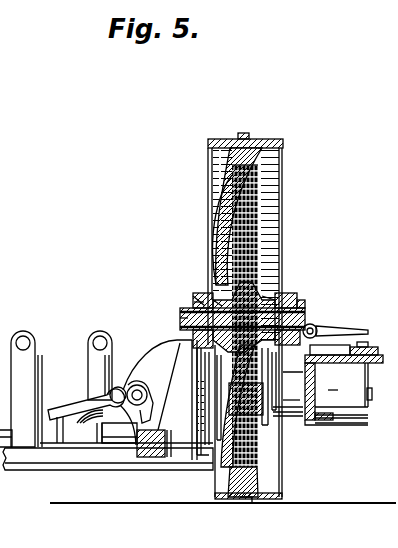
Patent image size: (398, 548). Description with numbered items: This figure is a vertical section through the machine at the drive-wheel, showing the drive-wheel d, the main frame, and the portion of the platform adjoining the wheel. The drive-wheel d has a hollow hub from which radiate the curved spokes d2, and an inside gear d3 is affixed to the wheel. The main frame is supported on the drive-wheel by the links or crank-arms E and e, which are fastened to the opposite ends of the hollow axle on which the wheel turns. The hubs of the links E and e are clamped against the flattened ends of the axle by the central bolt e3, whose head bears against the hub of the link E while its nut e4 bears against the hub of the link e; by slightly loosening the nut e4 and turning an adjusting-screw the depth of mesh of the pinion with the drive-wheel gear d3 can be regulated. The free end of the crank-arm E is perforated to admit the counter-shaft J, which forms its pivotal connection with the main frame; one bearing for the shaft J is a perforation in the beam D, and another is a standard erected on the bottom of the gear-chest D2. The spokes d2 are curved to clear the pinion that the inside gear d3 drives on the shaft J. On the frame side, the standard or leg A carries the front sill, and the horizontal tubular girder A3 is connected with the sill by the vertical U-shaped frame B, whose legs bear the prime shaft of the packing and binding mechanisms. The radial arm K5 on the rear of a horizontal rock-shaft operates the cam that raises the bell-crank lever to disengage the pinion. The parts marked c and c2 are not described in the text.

The drive-wheel d is at (254, 316).
The spokes d2 is at (237, 325).
The inside gear d3 is at (256, 183).
The link or crank-arm e is at (190, 300).
The central bolt e3 is at (180, 316).
The nut e4 is at (192, 308).
The link or crank-arm E is at (304, 298).
The radial arm K5 is at (345, 329).
The beam D is at (344, 390).
The gear-chest D2 is at (340, 387).
The counter-shaft J is at (267, 412).
The vertical U-shaped frame B is at (12, 406).
The standard or leg A is at (158, 400).
The tubular girder A3 is at (106, 446).
The rod c is at (199, 401).
The rod c2 is at (208, 397).